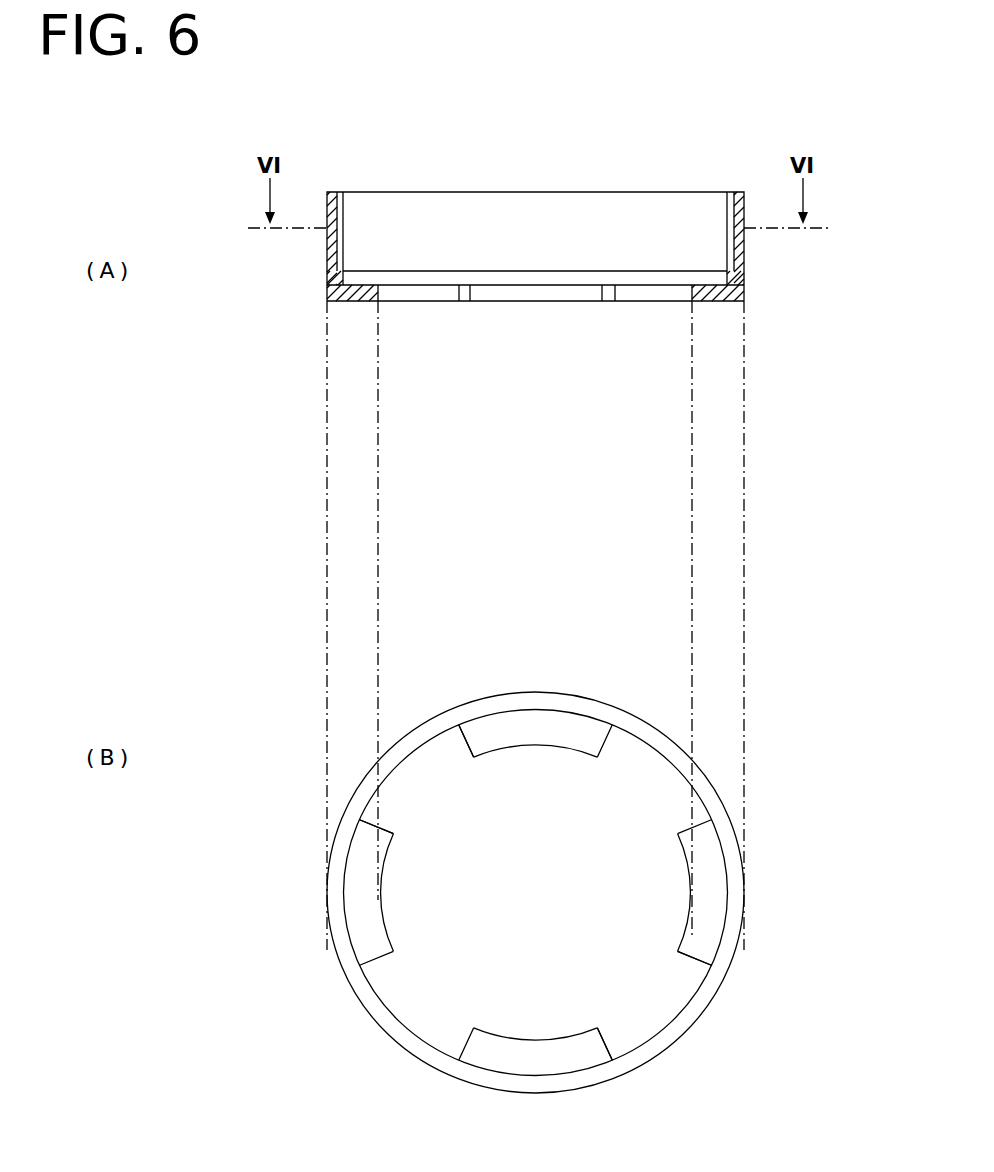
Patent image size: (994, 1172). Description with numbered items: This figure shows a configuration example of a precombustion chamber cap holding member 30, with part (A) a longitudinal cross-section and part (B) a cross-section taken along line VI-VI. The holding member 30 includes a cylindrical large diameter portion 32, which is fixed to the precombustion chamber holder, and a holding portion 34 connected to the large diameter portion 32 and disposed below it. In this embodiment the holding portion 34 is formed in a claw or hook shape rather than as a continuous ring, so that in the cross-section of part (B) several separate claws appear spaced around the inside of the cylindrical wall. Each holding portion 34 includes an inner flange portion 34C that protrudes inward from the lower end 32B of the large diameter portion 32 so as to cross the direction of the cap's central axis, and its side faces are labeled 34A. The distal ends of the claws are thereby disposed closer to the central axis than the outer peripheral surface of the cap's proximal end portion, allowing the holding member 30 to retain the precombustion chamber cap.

The precombustion chamber cap holding member 30 is at (880, 243).
The large diameter portion 32 is at (744, 255).
The lower end of the large diameter portion 32B is at (744, 302).
The holding portion 34 is at (605, 672).
The side face of claw portion 34A is at (378, 289).
The inner flange portion 34C is at (537, 733).